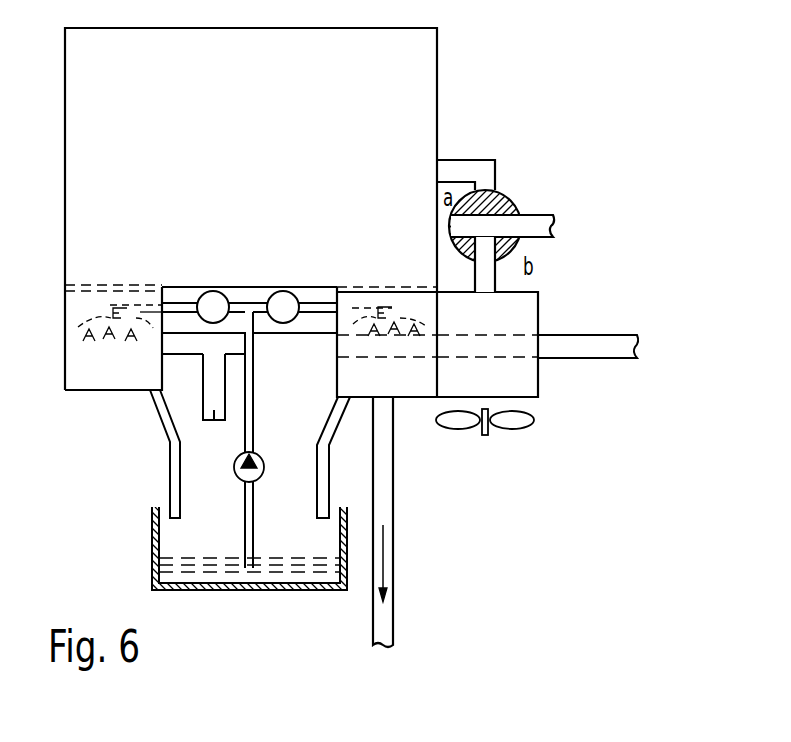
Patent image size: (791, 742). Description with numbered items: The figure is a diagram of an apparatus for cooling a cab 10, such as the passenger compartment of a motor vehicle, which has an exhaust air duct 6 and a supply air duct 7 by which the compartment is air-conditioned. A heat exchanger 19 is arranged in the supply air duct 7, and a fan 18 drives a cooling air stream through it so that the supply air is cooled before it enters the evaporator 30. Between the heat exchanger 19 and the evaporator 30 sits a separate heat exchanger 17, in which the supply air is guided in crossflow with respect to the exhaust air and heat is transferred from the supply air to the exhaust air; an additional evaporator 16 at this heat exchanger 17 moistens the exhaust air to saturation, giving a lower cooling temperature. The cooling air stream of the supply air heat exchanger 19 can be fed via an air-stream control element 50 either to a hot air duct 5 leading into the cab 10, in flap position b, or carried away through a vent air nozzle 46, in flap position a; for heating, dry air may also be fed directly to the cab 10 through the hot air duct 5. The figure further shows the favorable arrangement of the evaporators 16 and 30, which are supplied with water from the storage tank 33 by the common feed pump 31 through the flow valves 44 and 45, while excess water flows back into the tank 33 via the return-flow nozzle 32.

The cab 10 is at (188, 117).
The hot air duct 5 is at (457, 166).
The air-stream control element 50 is at (506, 195).
The vent air nozzle 46 is at (540, 216).
The supply air duct 7 is at (592, 338).
The flow valve 44 is at (213, 291).
The flow valve 45 is at (285, 291).
The evaporator 16 is at (403, 312).
The evaporator 30 is at (120, 379).
The return-flow nozzle 32 is at (212, 423).
The feed pump 31 is at (243, 473).
The storage tank 33 is at (289, 593).
The heat exchanger 17 is at (417, 385).
The heat exchanger 19 is at (520, 383).
The fan 18 is at (515, 423).
The exhaust air duct 6 is at (395, 567).